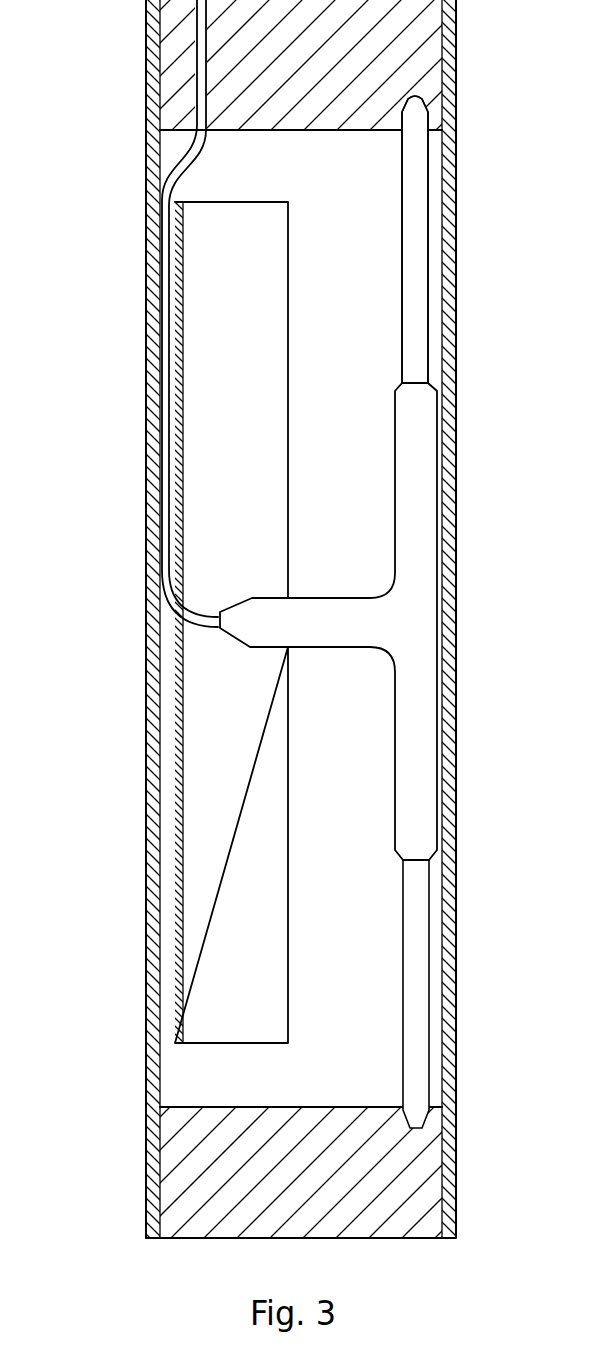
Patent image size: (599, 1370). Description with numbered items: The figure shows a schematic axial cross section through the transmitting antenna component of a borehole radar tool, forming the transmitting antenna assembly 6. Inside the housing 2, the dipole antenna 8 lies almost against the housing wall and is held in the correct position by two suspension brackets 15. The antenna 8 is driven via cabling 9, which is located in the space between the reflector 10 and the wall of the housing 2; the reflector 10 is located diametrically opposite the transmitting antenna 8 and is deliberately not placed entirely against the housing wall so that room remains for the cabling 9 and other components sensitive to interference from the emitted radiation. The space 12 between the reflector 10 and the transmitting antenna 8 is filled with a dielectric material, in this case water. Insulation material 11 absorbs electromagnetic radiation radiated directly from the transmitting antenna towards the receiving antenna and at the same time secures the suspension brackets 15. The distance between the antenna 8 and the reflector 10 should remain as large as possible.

The housing 2 is at (452, 212).
The transmitting antenna assembly 6 is at (122, 611).
The dipole antenna 8 is at (412, 593).
The cabling 9 is at (167, 463).
The reflector 10 is at (200, 297).
The insulation material 11 is at (177, 82).
The space 12 is at (385, 303).
The suspension brackets 15 is at (417, 360).